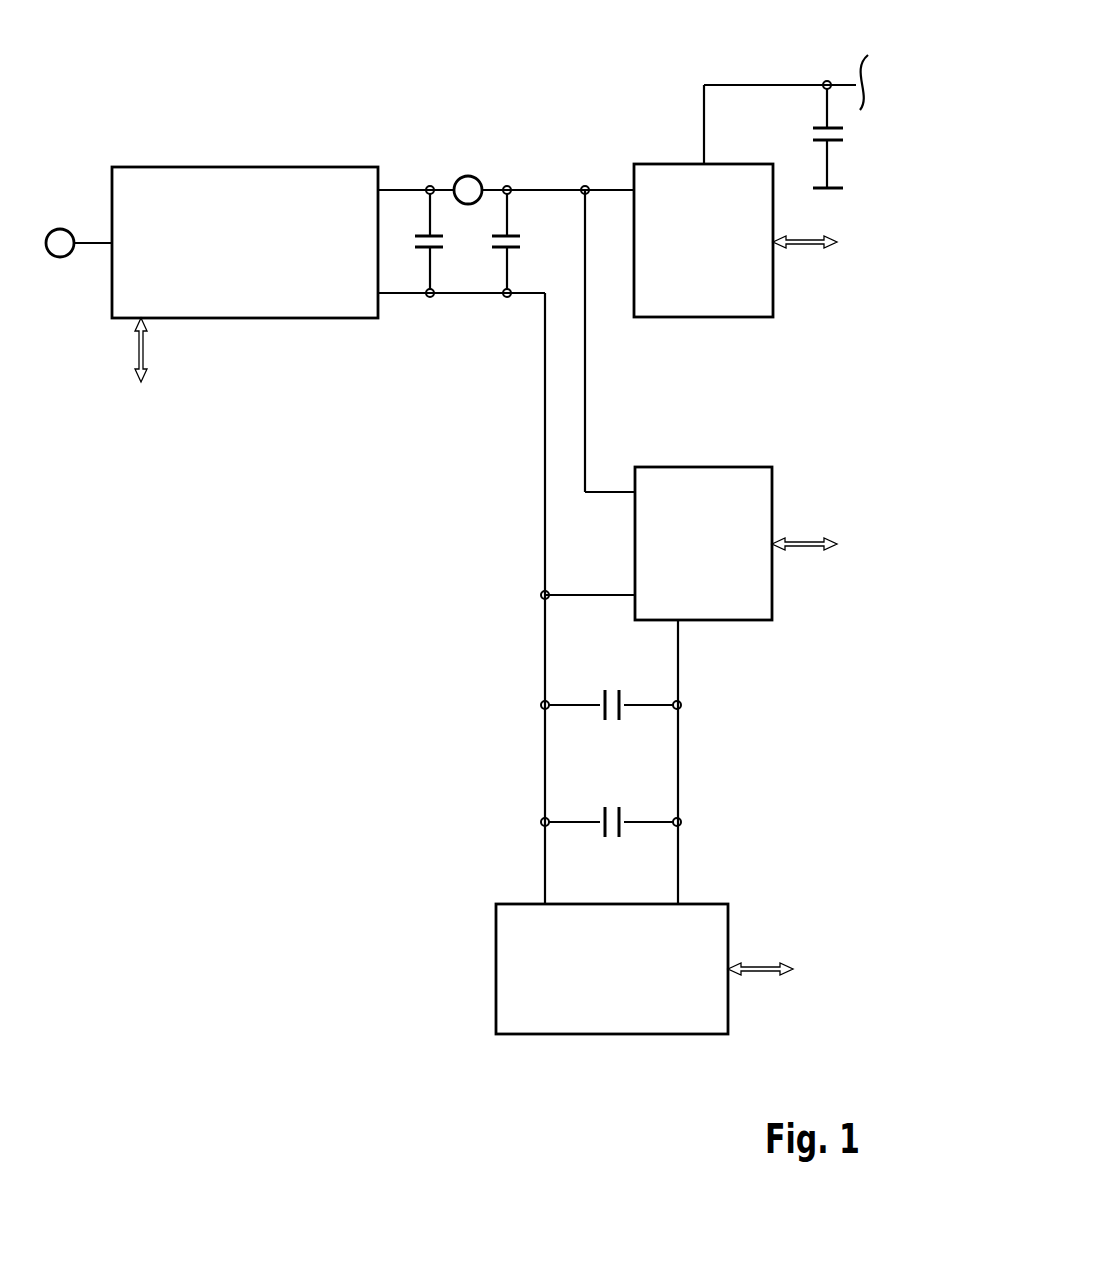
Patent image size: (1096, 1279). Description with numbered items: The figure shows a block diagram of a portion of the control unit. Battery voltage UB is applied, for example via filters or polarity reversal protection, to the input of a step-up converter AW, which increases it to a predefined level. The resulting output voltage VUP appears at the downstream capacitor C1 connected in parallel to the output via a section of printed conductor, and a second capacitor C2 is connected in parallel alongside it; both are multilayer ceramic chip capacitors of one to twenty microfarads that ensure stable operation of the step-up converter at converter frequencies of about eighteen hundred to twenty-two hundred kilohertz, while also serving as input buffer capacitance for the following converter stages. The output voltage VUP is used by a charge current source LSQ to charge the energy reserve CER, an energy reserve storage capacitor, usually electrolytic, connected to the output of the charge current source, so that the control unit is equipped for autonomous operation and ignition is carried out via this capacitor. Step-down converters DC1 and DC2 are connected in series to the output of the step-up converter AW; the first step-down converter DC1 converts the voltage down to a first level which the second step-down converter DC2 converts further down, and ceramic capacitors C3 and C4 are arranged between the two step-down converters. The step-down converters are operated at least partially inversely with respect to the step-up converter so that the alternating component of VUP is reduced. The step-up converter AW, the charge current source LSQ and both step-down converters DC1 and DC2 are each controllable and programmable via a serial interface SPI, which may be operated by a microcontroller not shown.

The step-up converter AW is at (243, 167).
The battery voltage UB is at (61, 221).
The output voltage VUP is at (468, 172).
The capacitor C1 is at (447, 241).
The capacitor C2 is at (524, 241).
The charge current source LSQ is at (657, 164).
The energy reserve CER is at (798, 138).
The step-down converter DC1 is at (703, 467).
The capacitor C3 is at (611, 726).
The capacitor C4 is at (611, 843).
The step-down converter DC2 is at (612, 1034).
The serial interface SPI is at (501, 606).